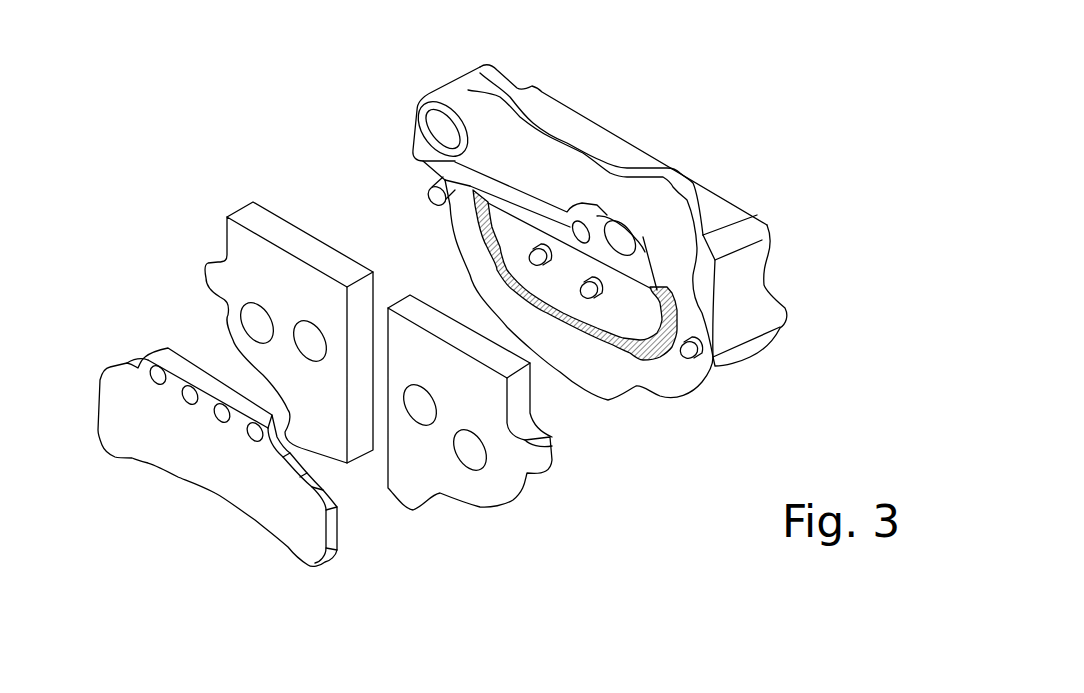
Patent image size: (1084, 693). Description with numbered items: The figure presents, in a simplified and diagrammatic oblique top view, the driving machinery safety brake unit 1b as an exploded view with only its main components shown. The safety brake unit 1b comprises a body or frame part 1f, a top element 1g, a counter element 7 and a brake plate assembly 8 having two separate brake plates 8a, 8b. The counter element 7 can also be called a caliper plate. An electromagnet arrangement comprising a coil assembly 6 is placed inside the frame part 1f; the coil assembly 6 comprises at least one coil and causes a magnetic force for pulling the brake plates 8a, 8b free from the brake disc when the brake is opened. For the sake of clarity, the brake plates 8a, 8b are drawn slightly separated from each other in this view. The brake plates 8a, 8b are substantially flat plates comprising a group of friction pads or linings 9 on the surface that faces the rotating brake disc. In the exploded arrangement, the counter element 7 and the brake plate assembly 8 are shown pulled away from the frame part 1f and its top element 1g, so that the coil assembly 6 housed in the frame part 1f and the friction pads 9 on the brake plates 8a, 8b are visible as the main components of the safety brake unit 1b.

The safety brake unit 1b is at (599, 249).
The frame part 1f is at (764, 281).
The top element 1g is at (416, 139).
The coil assembly 6 is at (644, 378).
The counter element 7 is at (216, 491).
The brake plate assembly 8 is at (371, 383).
The brake plate 8a is at (251, 308).
The brake plate 8b is at (498, 541).
The friction pads 9 is at (252, 328).